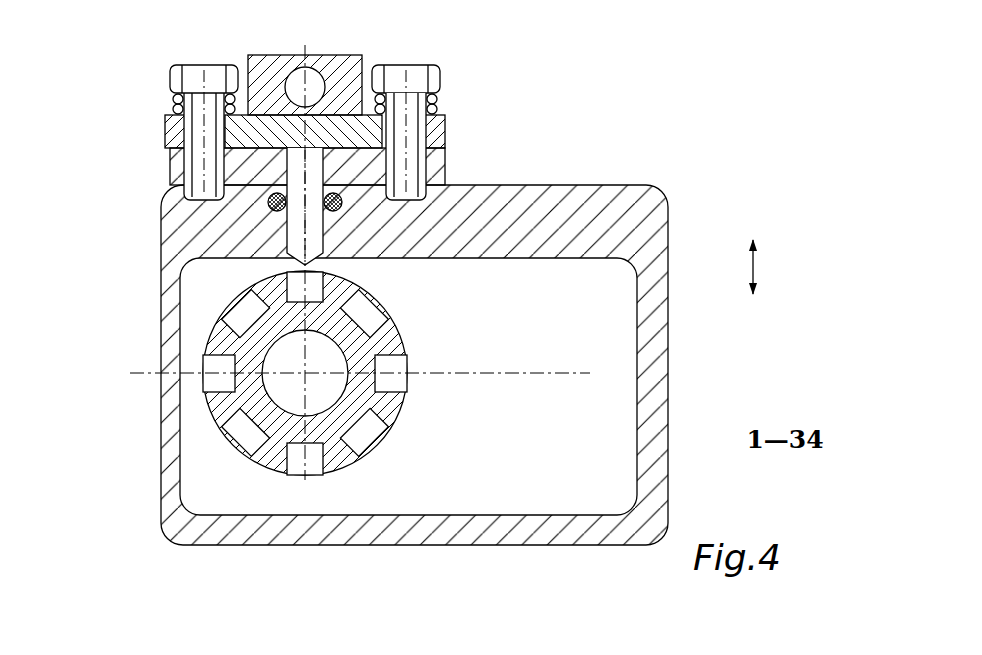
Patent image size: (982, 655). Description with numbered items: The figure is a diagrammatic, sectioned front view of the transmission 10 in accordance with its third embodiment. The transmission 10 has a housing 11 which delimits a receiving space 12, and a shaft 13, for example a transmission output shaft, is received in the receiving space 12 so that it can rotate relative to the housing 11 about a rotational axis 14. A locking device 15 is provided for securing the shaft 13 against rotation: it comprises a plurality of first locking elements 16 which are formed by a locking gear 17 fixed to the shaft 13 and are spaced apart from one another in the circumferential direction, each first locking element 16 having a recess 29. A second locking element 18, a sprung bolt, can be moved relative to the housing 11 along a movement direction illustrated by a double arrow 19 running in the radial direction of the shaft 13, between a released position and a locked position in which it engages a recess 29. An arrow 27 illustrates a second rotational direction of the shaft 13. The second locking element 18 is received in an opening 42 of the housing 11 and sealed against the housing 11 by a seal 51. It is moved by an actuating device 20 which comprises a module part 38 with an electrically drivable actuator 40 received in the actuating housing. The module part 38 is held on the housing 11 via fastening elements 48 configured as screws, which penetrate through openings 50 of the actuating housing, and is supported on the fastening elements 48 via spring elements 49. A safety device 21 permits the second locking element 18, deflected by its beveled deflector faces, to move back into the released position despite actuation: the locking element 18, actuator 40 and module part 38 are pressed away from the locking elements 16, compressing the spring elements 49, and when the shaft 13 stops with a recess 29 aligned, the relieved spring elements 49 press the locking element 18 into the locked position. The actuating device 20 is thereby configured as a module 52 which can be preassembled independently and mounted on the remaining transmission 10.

The transmission 10 is at (672, 352).
The housing 11 is at (660, 217).
The receiving space 12 is at (517, 341).
The shaft 13 is at (328, 395).
The rotational axis 14 is at (303, 375).
The locking device 15 is at (298, 490).
The first locking element 16 is at (214, 305).
The locking gear 17 is at (390, 343).
The second locking element 18 is at (263, 107).
The double arrow 19 is at (758, 265).
The actuating device 20 is at (331, 181).
The safety device 21 is at (444, 84).
The arrow 27 is at (372, 447).
The recess 29 is at (367, 305).
The module part 38 is at (355, 52).
The actuator 40 is at (313, 63).
The opening 42 is at (297, 228).
The fastening elements 48 is at (176, 72).
The spring elements 49 is at (173, 101).
The through openings 50 is at (166, 130).
The seal 51 is at (273, 203).
The module 52 is at (168, 165).